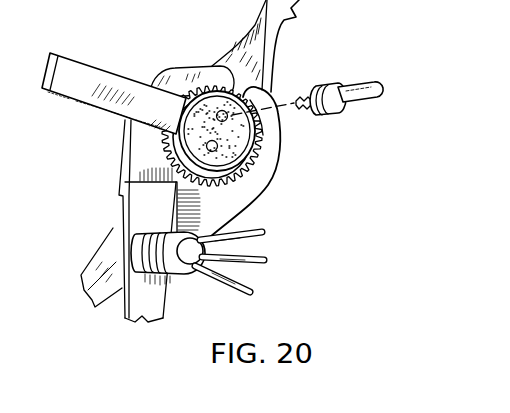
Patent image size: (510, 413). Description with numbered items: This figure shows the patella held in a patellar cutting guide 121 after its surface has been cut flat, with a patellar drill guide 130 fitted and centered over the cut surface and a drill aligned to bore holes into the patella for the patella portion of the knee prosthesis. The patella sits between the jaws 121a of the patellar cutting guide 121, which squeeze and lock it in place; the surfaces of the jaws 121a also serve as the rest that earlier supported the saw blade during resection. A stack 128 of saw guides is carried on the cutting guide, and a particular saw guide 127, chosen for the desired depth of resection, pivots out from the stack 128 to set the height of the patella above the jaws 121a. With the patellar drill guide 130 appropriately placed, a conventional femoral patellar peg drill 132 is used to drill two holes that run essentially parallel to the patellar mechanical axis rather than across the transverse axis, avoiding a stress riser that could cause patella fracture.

The patellar cutting guide 121 is at (291, 221).
The jaws 121a is at (132, 138).
The saw guide 127 is at (252, 292).
The stack 128 is at (142, 233).
The patellar drill guide 130 is at (180, 121).
The femoral patellar peg drill 132 is at (360, 86).